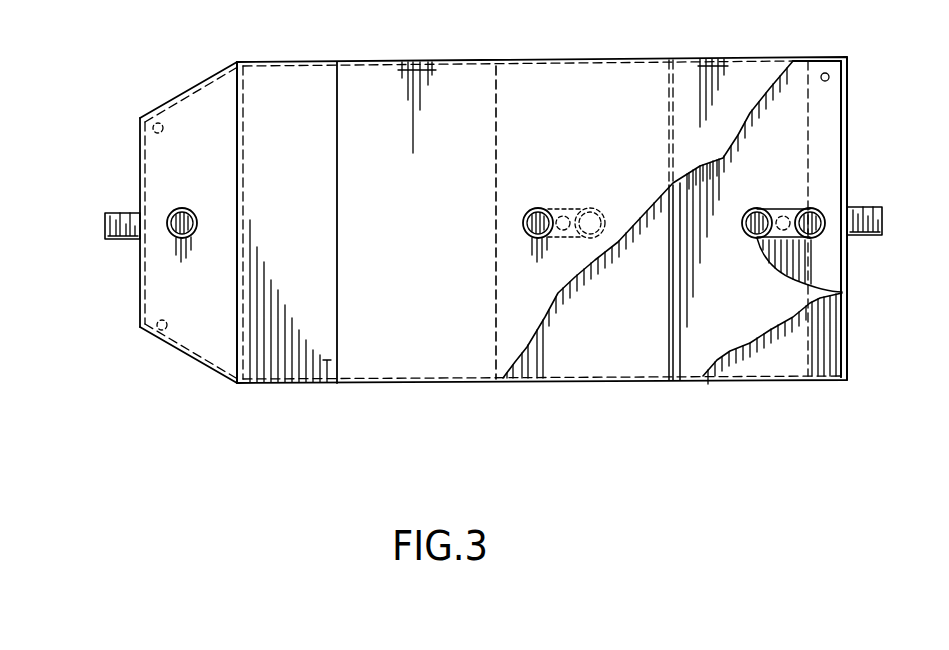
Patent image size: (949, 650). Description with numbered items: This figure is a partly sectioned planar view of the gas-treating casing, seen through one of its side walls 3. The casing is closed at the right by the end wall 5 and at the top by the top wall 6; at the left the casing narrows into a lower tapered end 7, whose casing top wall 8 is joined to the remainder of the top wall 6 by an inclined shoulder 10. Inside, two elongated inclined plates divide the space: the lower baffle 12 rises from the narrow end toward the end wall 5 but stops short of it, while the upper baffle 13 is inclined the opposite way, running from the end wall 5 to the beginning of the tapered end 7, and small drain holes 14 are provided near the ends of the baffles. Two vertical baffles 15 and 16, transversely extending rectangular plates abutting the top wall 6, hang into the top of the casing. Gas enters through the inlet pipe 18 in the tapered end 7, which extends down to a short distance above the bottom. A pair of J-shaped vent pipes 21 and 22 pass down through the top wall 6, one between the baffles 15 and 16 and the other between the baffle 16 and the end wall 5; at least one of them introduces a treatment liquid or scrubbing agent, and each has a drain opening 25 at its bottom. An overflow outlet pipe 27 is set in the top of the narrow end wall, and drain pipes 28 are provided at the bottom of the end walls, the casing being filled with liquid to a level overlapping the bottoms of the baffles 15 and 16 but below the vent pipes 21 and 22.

The side walls 3 is at (826, 56).
The end wall 5 is at (848, 148).
The top wall 6 is at (395, 241).
The tapered end 7 is at (160, 107).
The casing top wall 8 is at (187, 161).
The inclined shoulder 10 is at (275, 161).
The lower baffle 12 is at (777, 365).
The upper baffle 13 is at (692, 357).
The drain holes 14 is at (152, 140).
The vertical baffle 15 is at (498, 147).
The vertical baffle 16 is at (670, 313).
The inlet pipe 18 is at (175, 210).
The J-shaped vent pipe 21 is at (545, 210).
The J-shaped vent pipe 22 is at (833, 290).
The drain opening 25 is at (567, 250).
The overflow outlet pipe 27 is at (125, 240).
The drain pipes 28 is at (883, 237).